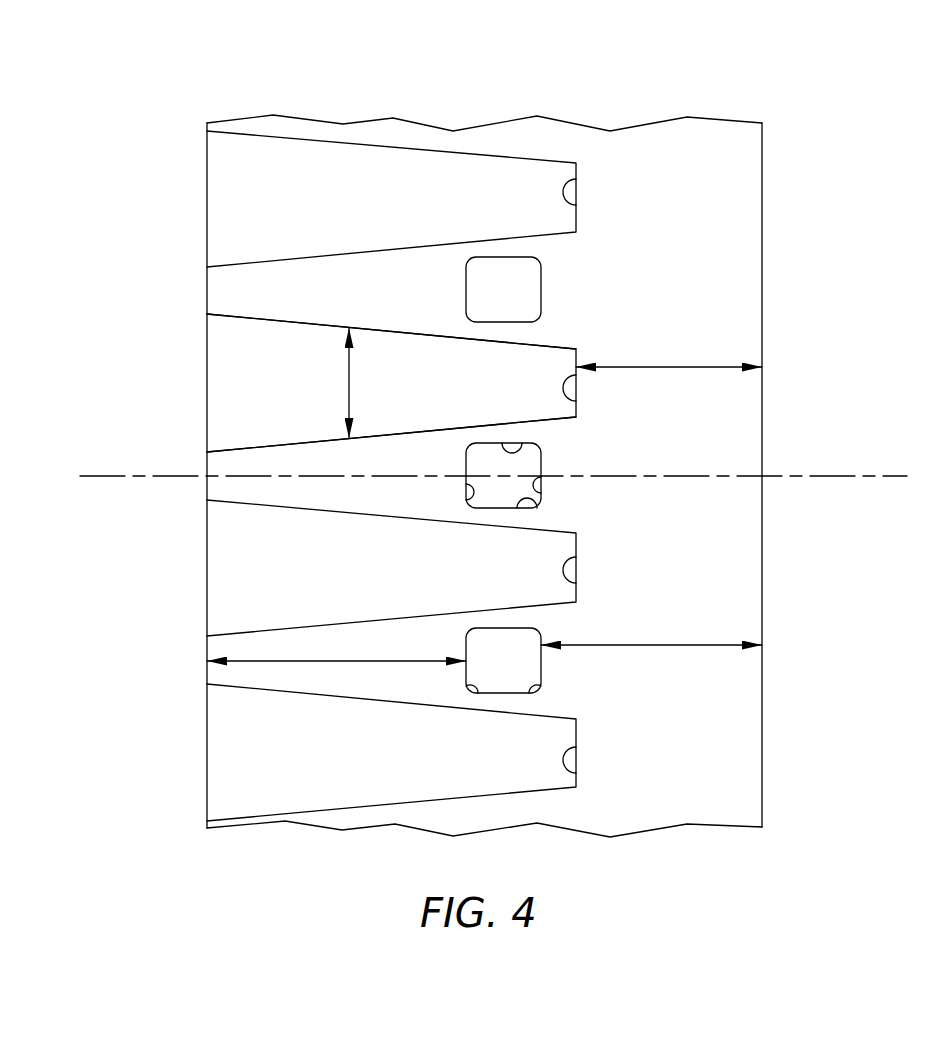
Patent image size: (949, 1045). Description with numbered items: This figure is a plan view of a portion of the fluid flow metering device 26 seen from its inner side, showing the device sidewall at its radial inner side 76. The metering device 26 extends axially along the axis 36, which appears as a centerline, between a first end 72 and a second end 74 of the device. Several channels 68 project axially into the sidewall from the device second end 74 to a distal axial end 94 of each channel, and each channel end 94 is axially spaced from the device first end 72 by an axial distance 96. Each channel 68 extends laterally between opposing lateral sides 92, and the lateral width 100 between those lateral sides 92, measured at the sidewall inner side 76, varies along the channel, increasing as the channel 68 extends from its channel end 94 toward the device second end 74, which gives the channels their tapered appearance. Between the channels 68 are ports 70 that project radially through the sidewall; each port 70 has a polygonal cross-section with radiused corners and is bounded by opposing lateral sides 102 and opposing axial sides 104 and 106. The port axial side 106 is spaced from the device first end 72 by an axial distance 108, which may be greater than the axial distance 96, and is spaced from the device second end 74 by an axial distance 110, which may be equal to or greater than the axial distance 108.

The metering device 26 is at (836, 103).
The axis 36 is at (855, 476).
The channel 68 is at (237, 220).
The port 70 is at (515, 292).
The first end 72 is at (762, 688).
The second end 74 is at (207, 670).
The radial inner side 76 is at (725, 268).
The lateral sides 92 is at (237, 317).
The axial end 94 is at (580, 203).
The axial distance 96 is at (663, 367).
The lateral width 100 is at (352, 390).
The lateral sides 102 is at (518, 447).
The axial side 104 is at (543, 492).
The axial side 106 is at (467, 500).
The axial distance 108 is at (647, 643).
The axial distance 110 is at (332, 663).